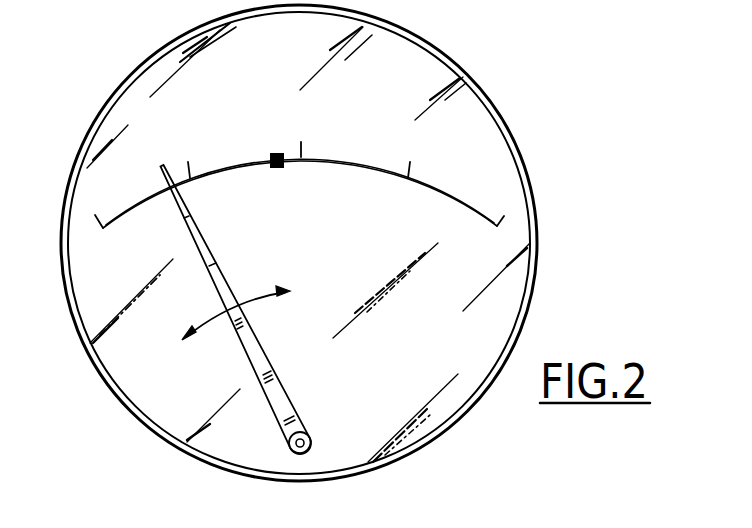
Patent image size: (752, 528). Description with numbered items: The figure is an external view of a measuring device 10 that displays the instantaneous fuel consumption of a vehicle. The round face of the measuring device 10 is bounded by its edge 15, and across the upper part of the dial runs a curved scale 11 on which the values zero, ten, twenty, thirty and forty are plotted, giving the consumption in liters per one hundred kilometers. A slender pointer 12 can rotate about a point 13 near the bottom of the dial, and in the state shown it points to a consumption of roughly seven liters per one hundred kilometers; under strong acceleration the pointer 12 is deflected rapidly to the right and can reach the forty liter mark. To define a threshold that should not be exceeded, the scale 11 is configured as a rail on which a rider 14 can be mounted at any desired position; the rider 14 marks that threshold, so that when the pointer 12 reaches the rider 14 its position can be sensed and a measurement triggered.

The measuring device 10 is at (520, 118).
The scale 11 is at (345, 163).
The pointer 12 is at (263, 353).
The point 13 is at (312, 434).
The rider 14 is at (274, 156).
The edge 15 is at (450, 430).